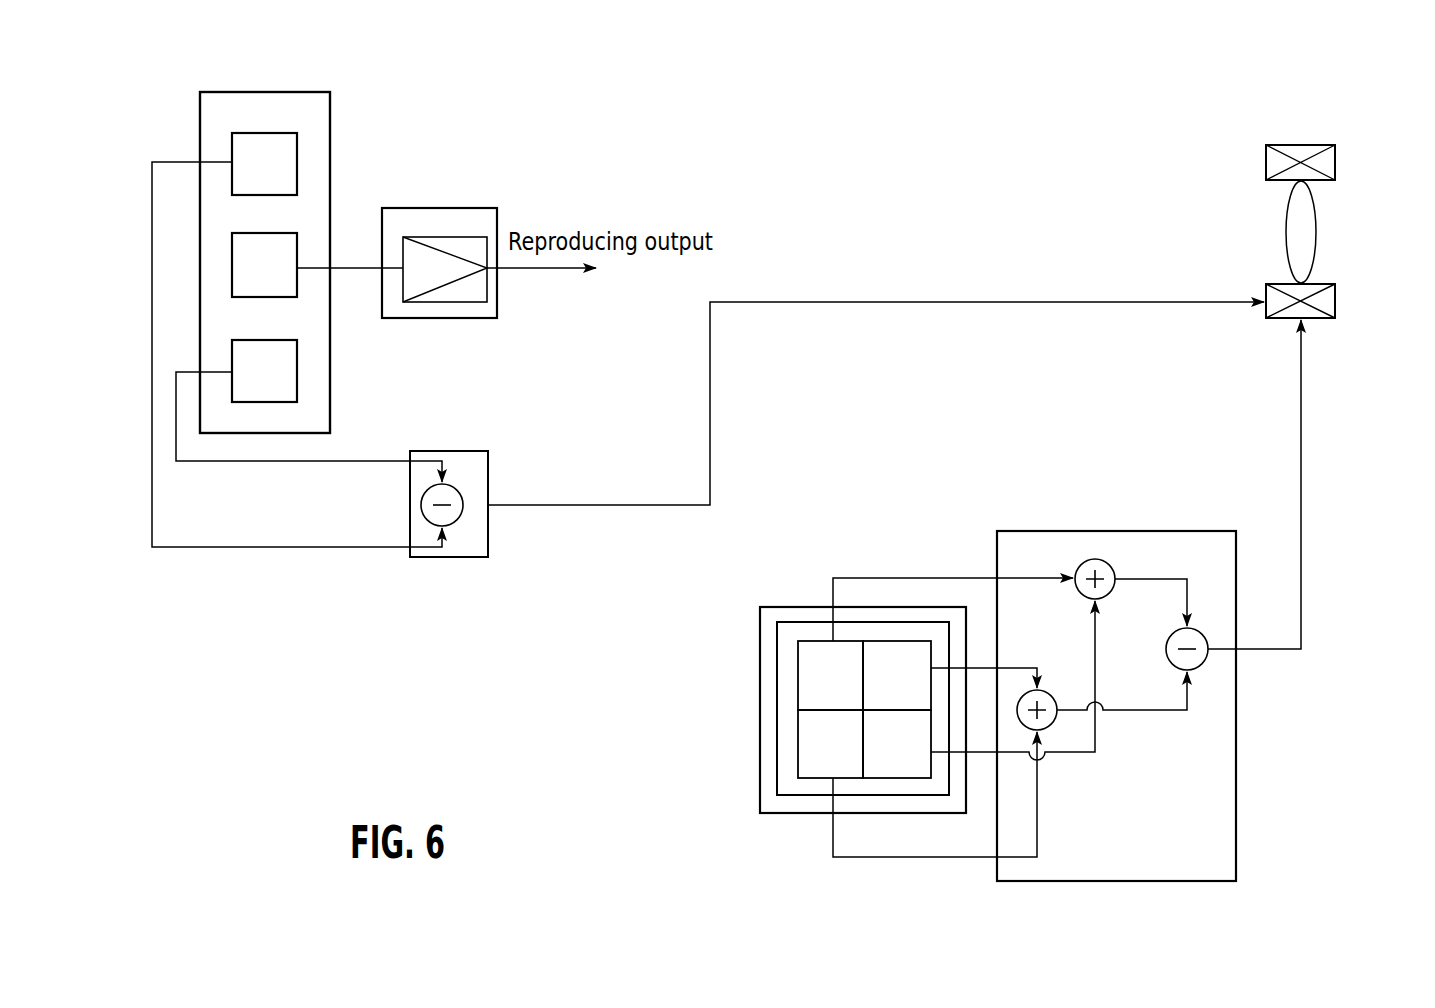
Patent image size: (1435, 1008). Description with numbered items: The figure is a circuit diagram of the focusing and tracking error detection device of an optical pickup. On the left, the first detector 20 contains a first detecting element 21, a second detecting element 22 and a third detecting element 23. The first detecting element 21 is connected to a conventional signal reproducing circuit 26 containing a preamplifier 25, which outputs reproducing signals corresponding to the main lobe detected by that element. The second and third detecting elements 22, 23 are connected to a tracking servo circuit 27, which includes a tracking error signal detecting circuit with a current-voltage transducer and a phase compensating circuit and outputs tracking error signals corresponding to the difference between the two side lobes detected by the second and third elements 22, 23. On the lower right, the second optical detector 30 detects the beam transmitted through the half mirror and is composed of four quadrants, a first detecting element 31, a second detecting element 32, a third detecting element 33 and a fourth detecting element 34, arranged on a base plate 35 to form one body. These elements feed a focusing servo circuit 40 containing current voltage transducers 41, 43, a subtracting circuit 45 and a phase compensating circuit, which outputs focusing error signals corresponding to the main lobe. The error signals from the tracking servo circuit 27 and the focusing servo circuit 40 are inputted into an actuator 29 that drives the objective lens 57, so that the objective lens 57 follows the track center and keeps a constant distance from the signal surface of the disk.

The first detector 20 is at (257, 228).
The first detecting element 21 is at (286, 275).
The second detecting element 22 is at (290, 147).
The third detecting element 23 is at (290, 390).
The preamplifier 25 is at (487, 300).
The signal reproducing circuit 26 is at (479, 223).
The tracking servo circuit 27 is at (488, 452).
The actuator 29 is at (1317, 160).
The objective lens 57 is at (1286, 230).
The second optical detector 30 is at (813, 699).
The first detecting element 31 is at (815, 666).
The second detecting element 32 is at (903, 655).
The third detecting element 33 is at (905, 765).
The fourth detecting element 34 is at (805, 757).
The base plate 35 is at (793, 791).
The focusing servo circuit 40 is at (1159, 655).
The current voltage transducer 41 is at (1113, 565).
The current voltage transducer 43 is at (1050, 725).
The subtracting circuit 45 is at (1203, 665).